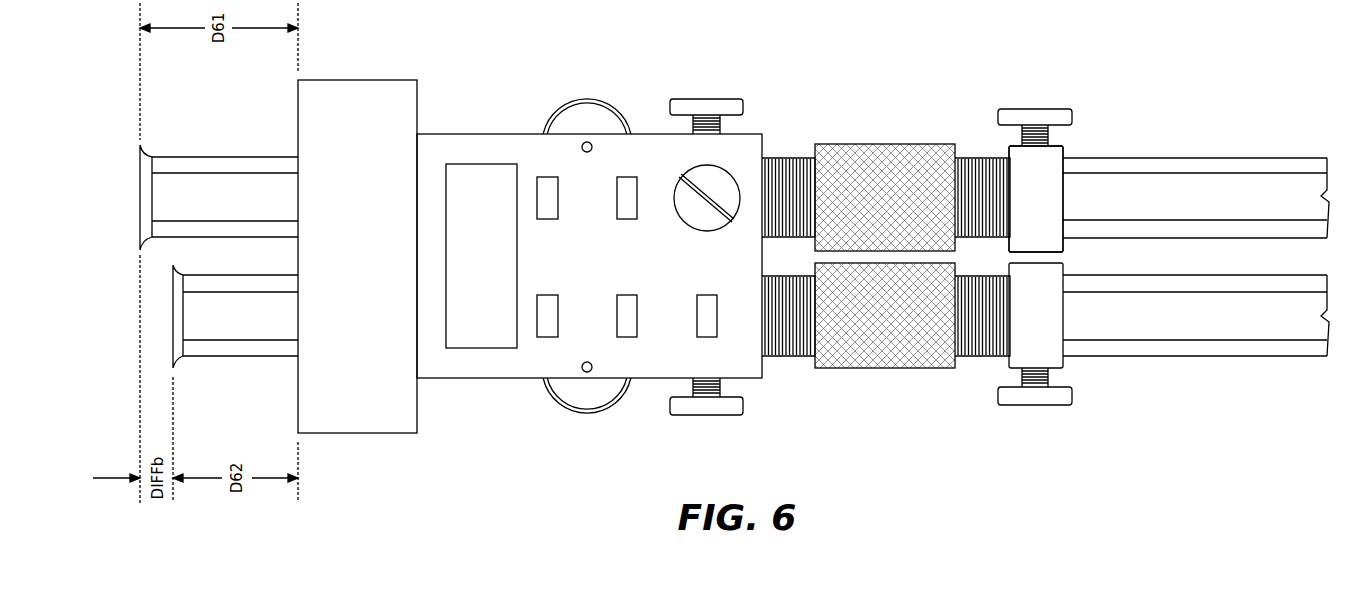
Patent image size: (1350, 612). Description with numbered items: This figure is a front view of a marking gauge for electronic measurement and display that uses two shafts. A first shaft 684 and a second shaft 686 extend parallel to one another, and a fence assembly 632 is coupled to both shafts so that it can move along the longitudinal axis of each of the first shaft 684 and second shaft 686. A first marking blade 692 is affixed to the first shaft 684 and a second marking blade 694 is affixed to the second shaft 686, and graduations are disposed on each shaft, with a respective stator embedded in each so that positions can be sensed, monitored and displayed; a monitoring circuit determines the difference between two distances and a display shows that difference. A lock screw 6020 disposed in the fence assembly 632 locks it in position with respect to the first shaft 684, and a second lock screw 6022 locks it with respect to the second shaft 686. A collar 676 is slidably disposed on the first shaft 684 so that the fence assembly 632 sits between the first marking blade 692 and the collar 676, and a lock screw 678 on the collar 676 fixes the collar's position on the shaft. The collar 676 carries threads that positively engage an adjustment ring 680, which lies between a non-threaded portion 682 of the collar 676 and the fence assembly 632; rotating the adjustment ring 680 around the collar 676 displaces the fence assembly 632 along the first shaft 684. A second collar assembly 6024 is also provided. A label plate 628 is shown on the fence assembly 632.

The first shaft 684 is at (224, 156).
The first marking blade 692 is at (140, 195).
The second marking blade 694 is at (173, 315).
The second shaft 686 is at (244, 357).
The fence assembly 632 is at (478, 133).
The label plate 628 is at (482, 349).
The lock screw 6020 is at (705, 97).
The lock screw 6022 is at (705, 416).
The adjustment ring 680 is at (883, 143).
The second collar assembly 6024 is at (883, 369).
The lock screw 678 is at (1033, 108).
The collar 676 is at (1048, 160).
The non-threaded portion 682 is at (1018, 205).